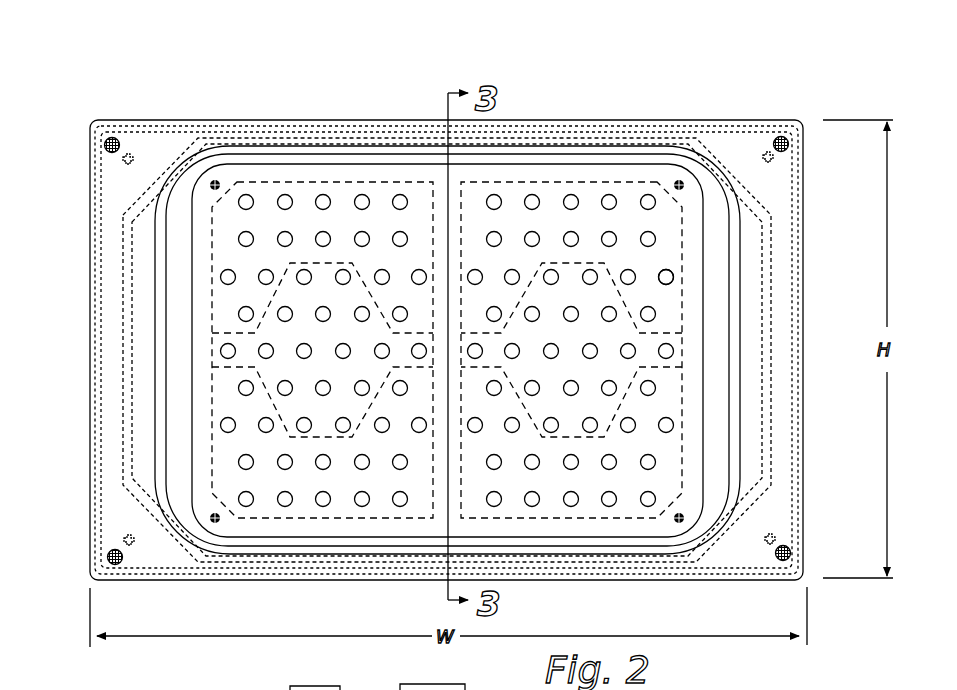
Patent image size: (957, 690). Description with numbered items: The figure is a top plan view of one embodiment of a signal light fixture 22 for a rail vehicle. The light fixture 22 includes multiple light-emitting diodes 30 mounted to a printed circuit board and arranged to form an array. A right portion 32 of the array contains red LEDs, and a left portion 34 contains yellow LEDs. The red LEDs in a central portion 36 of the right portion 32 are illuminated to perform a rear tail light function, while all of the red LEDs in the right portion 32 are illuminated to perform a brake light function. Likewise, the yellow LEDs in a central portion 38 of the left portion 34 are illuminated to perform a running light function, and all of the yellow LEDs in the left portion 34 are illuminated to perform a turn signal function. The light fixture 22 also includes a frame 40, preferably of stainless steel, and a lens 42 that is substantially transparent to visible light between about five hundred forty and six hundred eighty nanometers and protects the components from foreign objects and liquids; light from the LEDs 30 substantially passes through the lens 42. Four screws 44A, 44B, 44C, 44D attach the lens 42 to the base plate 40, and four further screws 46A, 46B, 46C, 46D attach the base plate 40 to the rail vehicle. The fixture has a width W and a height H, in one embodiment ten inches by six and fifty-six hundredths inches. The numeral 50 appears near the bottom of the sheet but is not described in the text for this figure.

The light fixture 22 is at (530, 90).
The light-emitting diodes 30 is at (675, 272).
The right portion 32 is at (560, 171).
The left portion 34 is at (393, 180).
The central portion 36 is at (625, 302).
The central portion 38 is at (287, 277).
The frame 40 is at (800, 447).
The lens 42 is at (743, 398).
The screw 44A is at (103, 147).
The screw 44B is at (118, 565).
The screw 44C is at (788, 565).
The screw 44D is at (781, 136).
The screw 46A is at (119, 166).
The screw 46B is at (124, 541).
The screw 46C is at (772, 540).
The screw 46D is at (774, 163).
The support leg 50 is at (305, 665).